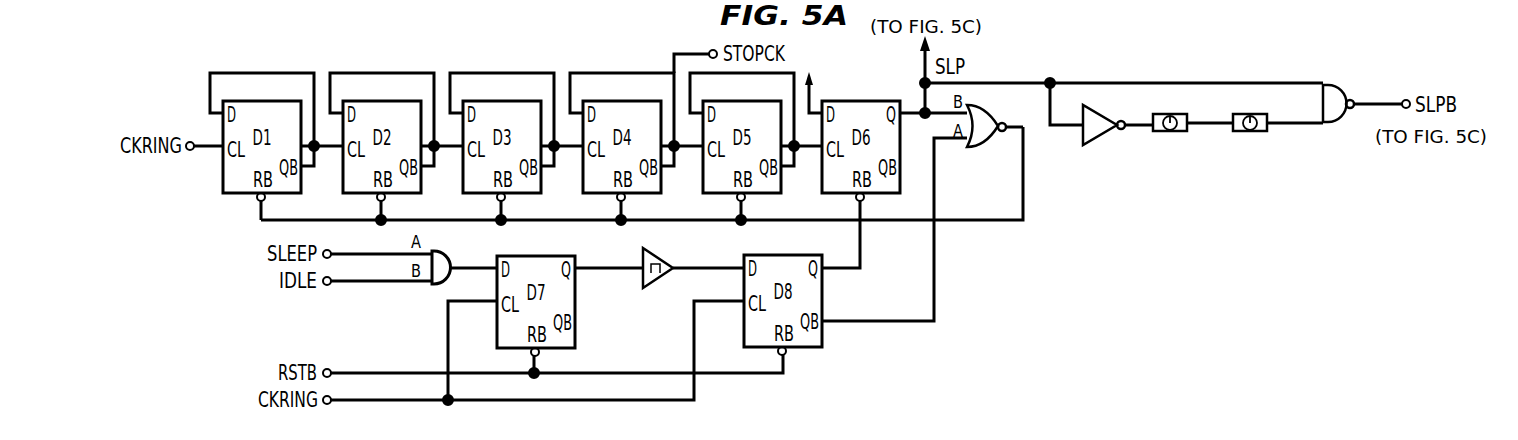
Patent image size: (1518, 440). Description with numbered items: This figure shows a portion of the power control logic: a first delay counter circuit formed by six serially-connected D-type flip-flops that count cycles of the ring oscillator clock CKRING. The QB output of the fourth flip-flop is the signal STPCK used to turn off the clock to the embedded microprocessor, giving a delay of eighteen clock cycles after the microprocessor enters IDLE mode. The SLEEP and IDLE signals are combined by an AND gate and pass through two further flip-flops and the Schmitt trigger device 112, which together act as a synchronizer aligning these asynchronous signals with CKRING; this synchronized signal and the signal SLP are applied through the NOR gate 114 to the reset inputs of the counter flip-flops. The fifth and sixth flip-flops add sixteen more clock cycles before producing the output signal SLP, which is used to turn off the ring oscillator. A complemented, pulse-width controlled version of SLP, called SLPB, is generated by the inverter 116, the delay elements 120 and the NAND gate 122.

The Schmitt trigger device 112 is at (663, 284).
The NOR gate 114 is at (986, 147).
The inverter 116 is at (1101, 142).
The delay elements 120 is at (1240, 132).
The NAND gate 122 is at (1337, 123).